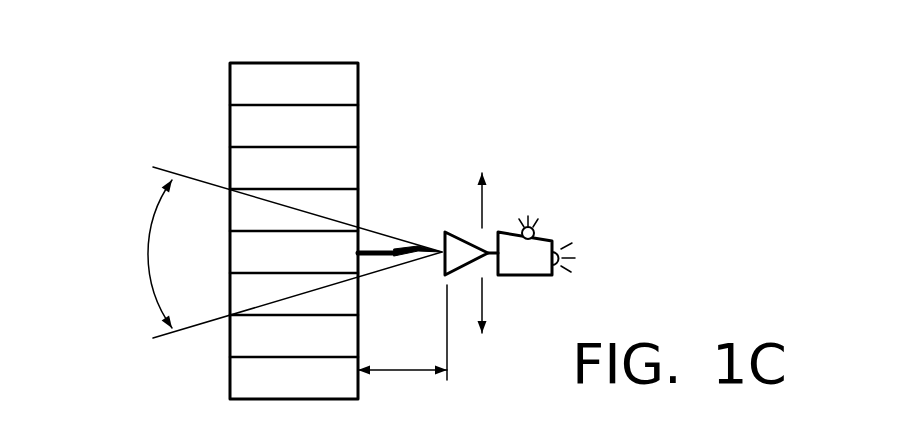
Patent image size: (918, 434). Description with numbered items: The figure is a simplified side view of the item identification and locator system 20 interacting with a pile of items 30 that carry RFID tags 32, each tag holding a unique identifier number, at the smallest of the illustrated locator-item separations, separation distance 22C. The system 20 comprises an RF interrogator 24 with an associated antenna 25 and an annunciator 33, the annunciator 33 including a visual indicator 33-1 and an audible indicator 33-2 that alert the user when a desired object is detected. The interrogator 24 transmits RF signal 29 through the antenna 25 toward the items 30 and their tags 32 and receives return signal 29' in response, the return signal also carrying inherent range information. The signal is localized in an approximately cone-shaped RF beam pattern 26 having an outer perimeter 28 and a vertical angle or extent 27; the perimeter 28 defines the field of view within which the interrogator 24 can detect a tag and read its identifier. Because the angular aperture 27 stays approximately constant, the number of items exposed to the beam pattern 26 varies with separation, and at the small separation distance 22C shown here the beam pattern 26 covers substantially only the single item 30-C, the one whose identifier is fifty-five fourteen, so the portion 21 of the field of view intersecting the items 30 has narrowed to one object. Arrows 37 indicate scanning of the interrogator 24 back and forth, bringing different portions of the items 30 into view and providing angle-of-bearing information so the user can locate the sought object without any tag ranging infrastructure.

The item identification and locator system 20 is at (633, 185).
The field of view portion 21 is at (110, 257).
The locator-item separation 22C is at (413, 371).
The RF interrogator 24 is at (517, 275).
The antenna 25 is at (452, 230).
The RF beam pattern 26 is at (221, 188).
The vertical angle 27 is at (148, 228).
The outer perimeter 28 is at (362, 280).
The RF signal 29 is at (378, 216).
The received signal 29' is at (412, 278).
The items 30 is at (377, 106).
The item with ID # 5514 30-C is at (230, 248).
The RFID tags 32 is at (288, 47).
The annunciator 33 is at (551, 192).
The visual indicator 33-1 is at (522, 230).
The audible indicator 33-2 is at (558, 252).
The scanning arrows 37 is at (478, 192).